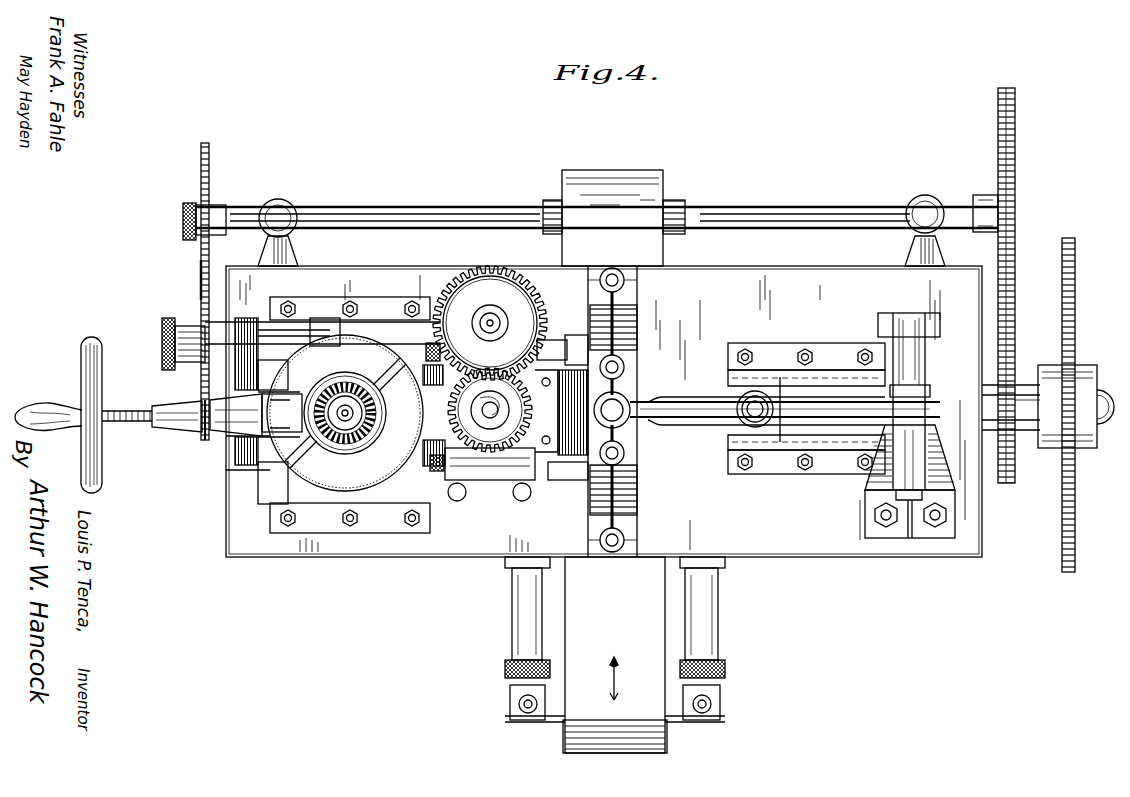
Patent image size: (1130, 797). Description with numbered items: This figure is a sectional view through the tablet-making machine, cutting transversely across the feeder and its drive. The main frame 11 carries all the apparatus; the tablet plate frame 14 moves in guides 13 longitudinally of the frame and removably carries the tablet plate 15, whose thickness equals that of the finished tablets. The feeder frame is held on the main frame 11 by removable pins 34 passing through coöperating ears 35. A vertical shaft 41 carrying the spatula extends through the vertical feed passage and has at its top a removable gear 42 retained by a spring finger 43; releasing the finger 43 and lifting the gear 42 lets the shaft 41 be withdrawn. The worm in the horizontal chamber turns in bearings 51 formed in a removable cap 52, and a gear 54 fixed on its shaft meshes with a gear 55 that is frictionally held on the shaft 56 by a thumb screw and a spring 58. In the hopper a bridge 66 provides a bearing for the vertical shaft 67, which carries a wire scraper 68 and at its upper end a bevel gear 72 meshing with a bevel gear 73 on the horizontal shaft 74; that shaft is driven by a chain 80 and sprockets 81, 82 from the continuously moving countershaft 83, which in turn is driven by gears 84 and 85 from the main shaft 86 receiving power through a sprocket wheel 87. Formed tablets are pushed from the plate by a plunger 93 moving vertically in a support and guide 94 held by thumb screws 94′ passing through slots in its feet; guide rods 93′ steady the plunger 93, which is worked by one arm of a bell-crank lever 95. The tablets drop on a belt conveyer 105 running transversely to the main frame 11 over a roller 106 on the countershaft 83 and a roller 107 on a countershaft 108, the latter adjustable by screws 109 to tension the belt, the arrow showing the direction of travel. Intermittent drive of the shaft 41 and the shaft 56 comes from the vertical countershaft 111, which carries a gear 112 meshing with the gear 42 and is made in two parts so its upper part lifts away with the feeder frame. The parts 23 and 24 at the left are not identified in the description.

The main frame 11 is at (905, 558).
The guides 13 is at (818, 372).
The tablet plate frame 14 is at (680, 398).
The tablet plate 15 is at (570, 482).
The threaded rod 23 is at (142, 425).
The hand crank 24 is at (96, 494).
The removable pins 34 is at (436, 340).
The ears 35 is at (506, 486).
The vertical shaft 41 is at (508, 410).
The removable gear 42 is at (548, 411).
The spring finger 43 is at (418, 420).
The bearings 51 is at (228, 442).
The cap 52 is at (262, 478).
The gear 54 is at (245, 470).
The gear 55 is at (246, 318).
The shaft 56 is at (296, 328).
The spring 58 is at (190, 322).
The bridge 66 is at (380, 408).
The vertical shaft 67 is at (344, 422).
The wire scraper 68 is at (384, 372).
The bevel gear 72 is at (338, 390).
The bevel gear 73 is at (316, 400).
The horizontal shaft 74 is at (192, 432).
The chain 80 is at (202, 270).
The sprocket 81 is at (206, 440).
The sprocket 82 is at (210, 150).
The countershaft 83 is at (400, 210).
The gear 84 is at (998, 112).
The gear 85 is at (1008, 380).
The main shaft 86 is at (1103, 428).
The sprocket wheel 87 is at (1068, 236).
The plunger 93 is at (625, 402).
The guide rods 93′ is at (622, 362).
The support and guide 94 is at (622, 490).
The thumb screws 94′ is at (625, 280).
The bell-crank lever 95 is at (726, 420).
The belt conveyer 105 is at (615, 655).
The roller 106 is at (664, 184).
The roller 107 is at (668, 740).
The countershaft 108 is at (722, 700).
The screws 109 is at (505, 668).
The vertical countershaft 111 is at (494, 322).
The gear 112 is at (485, 268).